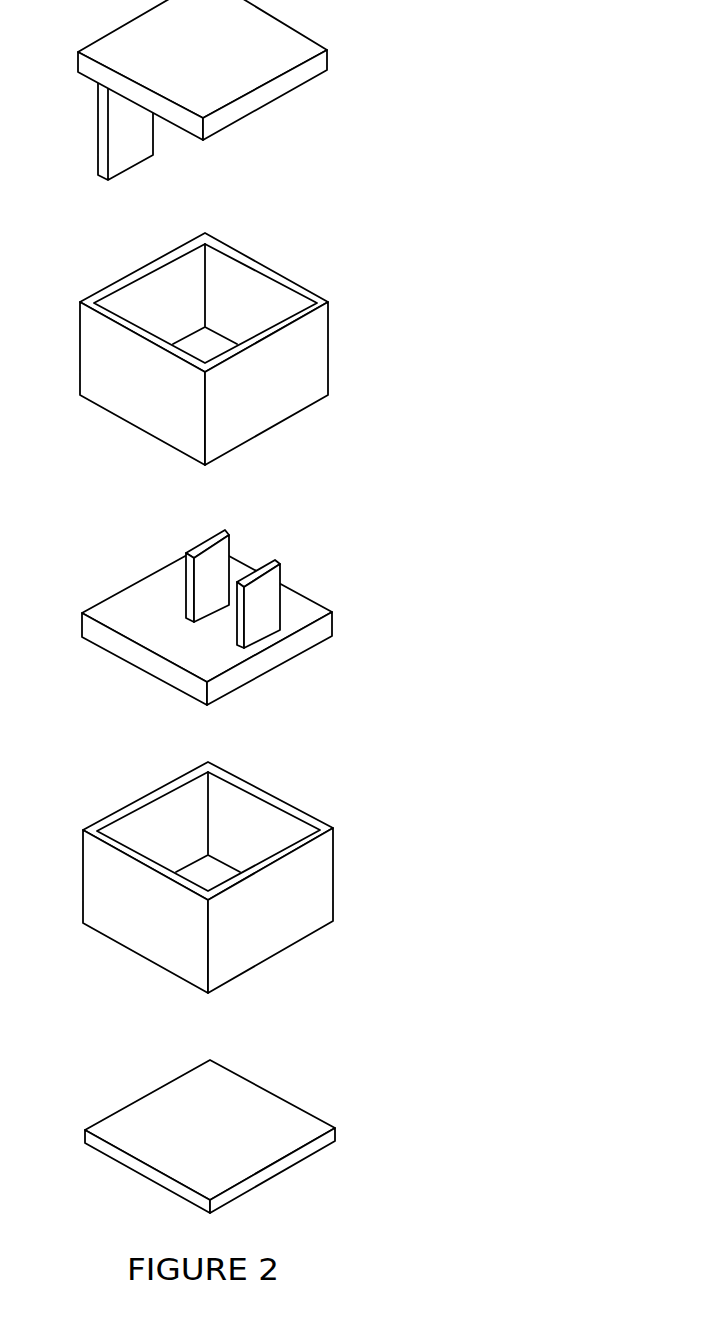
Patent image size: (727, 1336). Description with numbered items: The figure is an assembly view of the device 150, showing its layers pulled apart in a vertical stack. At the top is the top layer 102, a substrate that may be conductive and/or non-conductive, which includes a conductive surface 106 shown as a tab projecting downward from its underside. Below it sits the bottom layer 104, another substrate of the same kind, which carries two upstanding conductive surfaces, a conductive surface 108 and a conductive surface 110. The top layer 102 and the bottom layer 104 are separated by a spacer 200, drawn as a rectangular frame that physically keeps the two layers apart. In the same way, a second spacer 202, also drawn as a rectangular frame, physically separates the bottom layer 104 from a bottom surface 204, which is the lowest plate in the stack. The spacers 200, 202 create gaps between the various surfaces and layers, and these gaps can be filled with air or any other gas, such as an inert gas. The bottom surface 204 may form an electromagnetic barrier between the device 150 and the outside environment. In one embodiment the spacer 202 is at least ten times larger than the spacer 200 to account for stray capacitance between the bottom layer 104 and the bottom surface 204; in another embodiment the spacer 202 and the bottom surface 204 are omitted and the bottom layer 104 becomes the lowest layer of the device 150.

The top layer 102 is at (310, 45).
The conductive surface 106 is at (118, 123).
The spacer 200 is at (317, 346).
The bottom layer 104 is at (315, 630).
The conductive surface 108 is at (220, 552).
The conductive surface 110 is at (273, 580).
The spacer 202 is at (320, 868).
The bottom surface 204 is at (323, 1140).
The device 150 is at (311, 623).